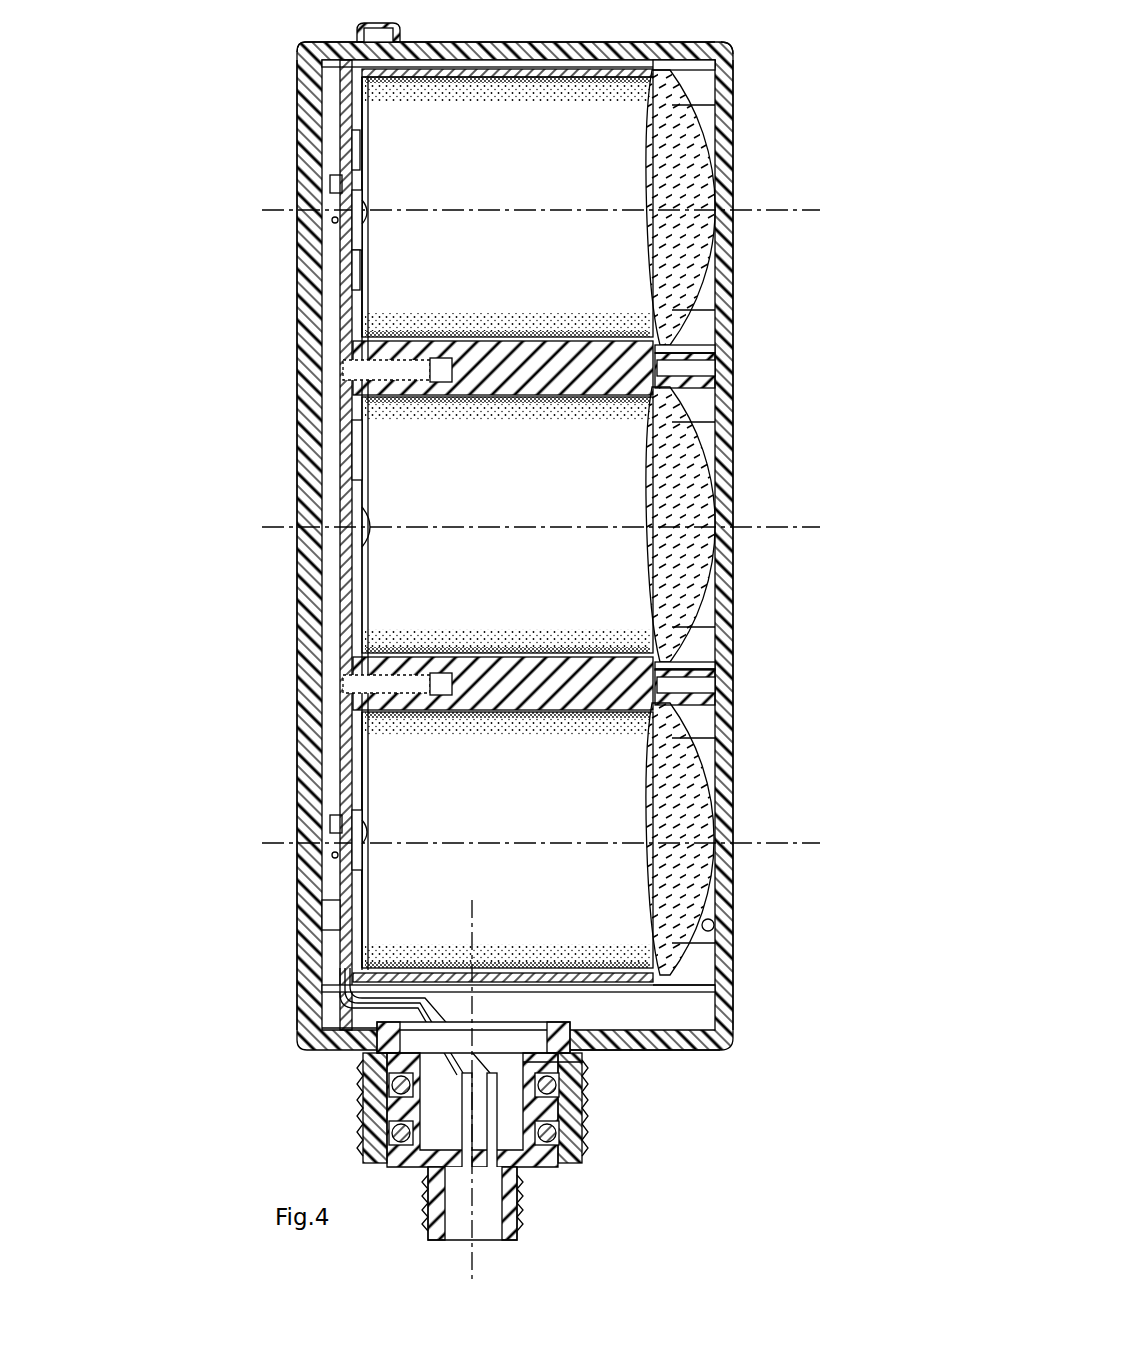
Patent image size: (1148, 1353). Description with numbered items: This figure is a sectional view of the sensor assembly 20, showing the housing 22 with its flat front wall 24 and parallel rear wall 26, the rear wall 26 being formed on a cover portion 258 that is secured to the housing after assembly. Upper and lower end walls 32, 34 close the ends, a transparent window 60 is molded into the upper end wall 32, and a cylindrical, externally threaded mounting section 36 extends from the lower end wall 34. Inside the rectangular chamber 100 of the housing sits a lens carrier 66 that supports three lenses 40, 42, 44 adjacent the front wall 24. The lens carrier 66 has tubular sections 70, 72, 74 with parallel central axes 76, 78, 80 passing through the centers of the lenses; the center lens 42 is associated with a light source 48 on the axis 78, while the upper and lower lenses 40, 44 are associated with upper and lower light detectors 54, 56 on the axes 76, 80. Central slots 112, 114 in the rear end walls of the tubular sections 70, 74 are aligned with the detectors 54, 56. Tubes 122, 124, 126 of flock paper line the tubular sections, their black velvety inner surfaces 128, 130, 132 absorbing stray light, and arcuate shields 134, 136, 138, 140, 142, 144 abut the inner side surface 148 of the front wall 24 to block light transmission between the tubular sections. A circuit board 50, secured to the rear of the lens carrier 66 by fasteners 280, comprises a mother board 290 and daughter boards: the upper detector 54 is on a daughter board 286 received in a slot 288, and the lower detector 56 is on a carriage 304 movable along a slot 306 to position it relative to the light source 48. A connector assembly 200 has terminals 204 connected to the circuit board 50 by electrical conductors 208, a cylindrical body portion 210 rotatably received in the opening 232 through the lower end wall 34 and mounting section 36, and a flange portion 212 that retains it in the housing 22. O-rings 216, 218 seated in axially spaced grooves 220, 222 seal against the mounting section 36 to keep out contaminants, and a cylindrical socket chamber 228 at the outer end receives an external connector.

The sensor assembly 20 is at (190, 185).
The housing 22 is at (737, 95).
The front wall 24 is at (722, 290).
The rear wall 26 is at (300, 725).
The upper end wall 32 is at (560, 50).
The lower end wall 34 is at (690, 1042).
The mounting section 36 is at (476, 1093).
The upper lens 40 is at (675, 142).
The center lens 42 is at (690, 472).
The lower lens 44 is at (680, 792).
The light source 48 is at (358, 535).
The circuit board 50 is at (337, 595).
The upper light detector 54 is at (348, 228).
The lower light detector 56 is at (348, 852).
The window 60 is at (396, 30).
The lens carrier 66 is at (590, 62).
The upper tubular section 70 is at (345, 92).
The center tubular section 72 is at (360, 422).
The lower tubular section 74 is at (350, 742).
The central axis 76 is at (790, 212).
The central axis 78 is at (770, 529).
The central axis 80 is at (790, 845).
The rectangular chamber 100 is at (675, 1017).
The central slot 112 is at (365, 292).
The central slot 114 is at (370, 897).
The tube 122 is at (395, 88).
The tube 124 is at (470, 403).
The tube 126 is at (480, 718).
The black inner surface 128 is at (490, 330).
The black inner surface 130 is at (500, 645).
The black inner surface 132 is at (545, 962).
The arcuate shield 134 is at (736, 46).
The arcuate shield 136 is at (735, 345).
The arcuate shield 138 is at (730, 382).
The arcuate shield 140 is at (735, 662).
The arcuate shield 142 is at (722, 702).
The arcuate shield 144 is at (730, 987).
The inner side surface 148 is at (722, 927).
The connector assembly 200 is at (372, 1122).
The terminals 204 is at (460, 1185).
The electrical conductors 208 is at (360, 988).
The body portion 210 is at (365, 1092).
The flange portion 212 is at (580, 1032).
The O-ring 216 is at (575, 1090).
The O-ring 218 is at (562, 1140).
The groove 220 is at (585, 1080).
The groove 222 is at (560, 1168).
The socket chamber 228 is at (458, 1222).
The cylindrical opening 232 is at (362, 1042).
The cover portion 258 is at (300, 46).
The fasteners 280 is at (345, 372).
The daughter board 286 is at (333, 183).
The slot 288 is at (352, 153).
The mother board 290 is at (355, 447).
The carriage 304 is at (340, 832).
The slot 306 is at (318, 922).